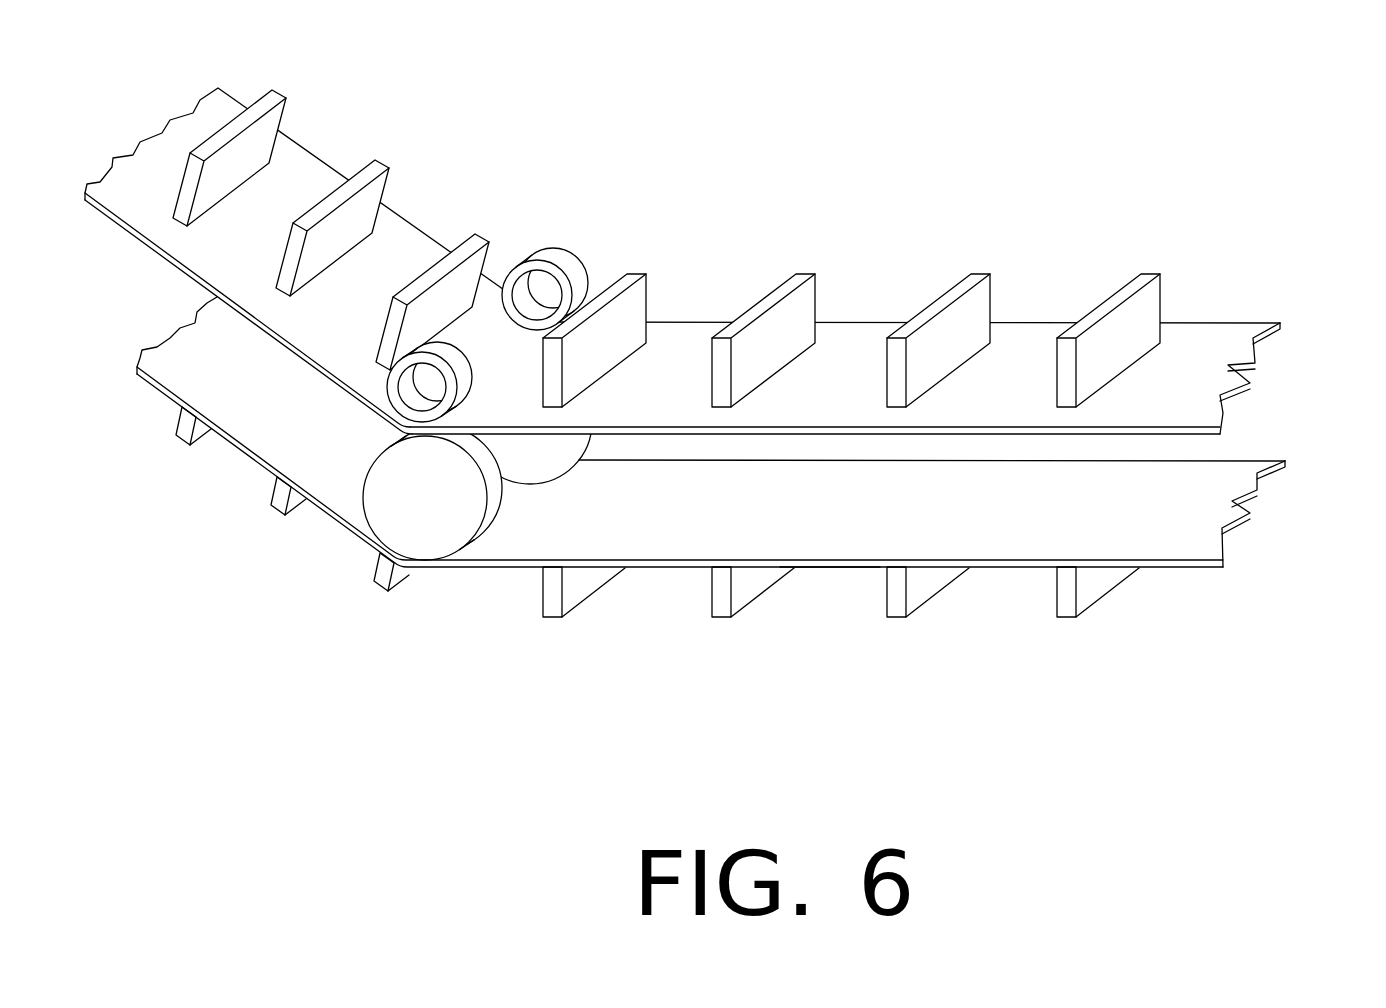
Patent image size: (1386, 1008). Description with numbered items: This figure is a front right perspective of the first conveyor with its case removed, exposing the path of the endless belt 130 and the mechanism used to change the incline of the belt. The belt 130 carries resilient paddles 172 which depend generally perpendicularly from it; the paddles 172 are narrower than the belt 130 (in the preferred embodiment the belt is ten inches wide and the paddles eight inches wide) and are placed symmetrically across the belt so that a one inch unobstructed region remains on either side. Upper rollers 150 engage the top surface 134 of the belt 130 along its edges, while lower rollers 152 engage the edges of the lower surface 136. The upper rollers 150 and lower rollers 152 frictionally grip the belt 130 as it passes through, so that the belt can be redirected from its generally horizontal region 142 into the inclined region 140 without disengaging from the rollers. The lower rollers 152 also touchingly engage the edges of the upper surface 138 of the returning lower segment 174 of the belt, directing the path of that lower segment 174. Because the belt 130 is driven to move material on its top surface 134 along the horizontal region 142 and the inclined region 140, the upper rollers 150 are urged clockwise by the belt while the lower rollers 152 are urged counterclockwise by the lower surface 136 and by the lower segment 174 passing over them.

The endless belt 130 is at (677, 322).
The top surface 134 is at (833, 373).
The lower surface 136 is at (607, 436).
The upper surface of returning lower segment 138 is at (872, 513).
The inclined region 140 is at (223, 90).
The generally horizontal region 142 is at (1232, 322).
The upper rollers 150 is at (560, 250).
The lower rollers 152 is at (443, 508).
The resilient paddles 172 is at (373, 160).
The returning lower segment 174 is at (843, 572).